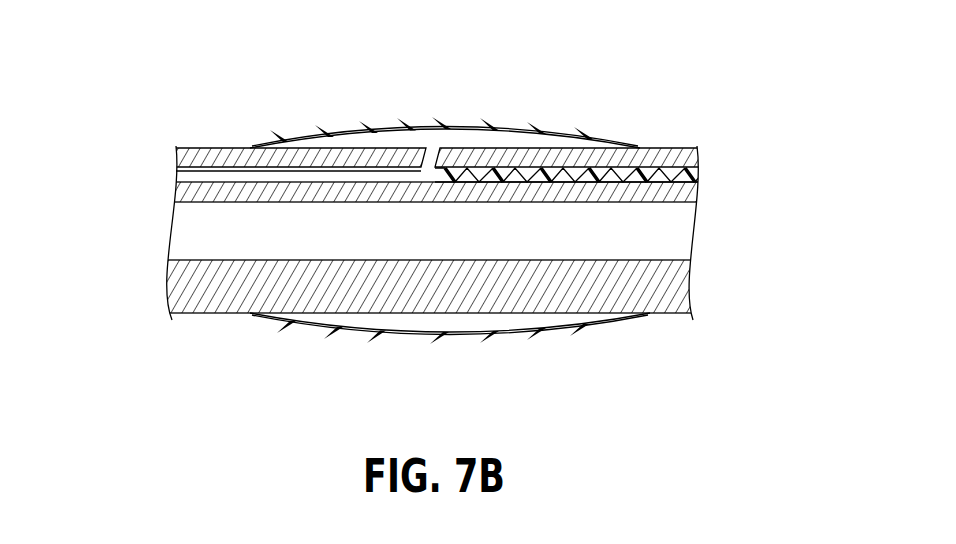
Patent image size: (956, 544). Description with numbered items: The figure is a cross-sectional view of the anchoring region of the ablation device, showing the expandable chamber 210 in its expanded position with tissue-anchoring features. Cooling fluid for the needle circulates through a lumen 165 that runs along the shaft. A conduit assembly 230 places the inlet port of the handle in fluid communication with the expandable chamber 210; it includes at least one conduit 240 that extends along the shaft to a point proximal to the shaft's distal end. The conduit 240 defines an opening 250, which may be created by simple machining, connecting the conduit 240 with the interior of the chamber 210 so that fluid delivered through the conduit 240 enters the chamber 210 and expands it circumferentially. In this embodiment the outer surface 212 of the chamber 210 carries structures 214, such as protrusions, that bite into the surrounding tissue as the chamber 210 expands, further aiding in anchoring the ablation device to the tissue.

The lumen 165 is at (683, 238).
The expandable chamber 210 is at (571, 138).
The outer surface 212 is at (352, 134).
The structures 214 is at (500, 131).
The conduit assembly 230 is at (220, 147).
The conduit 240 is at (190, 171).
The opening 250 is at (430, 147).